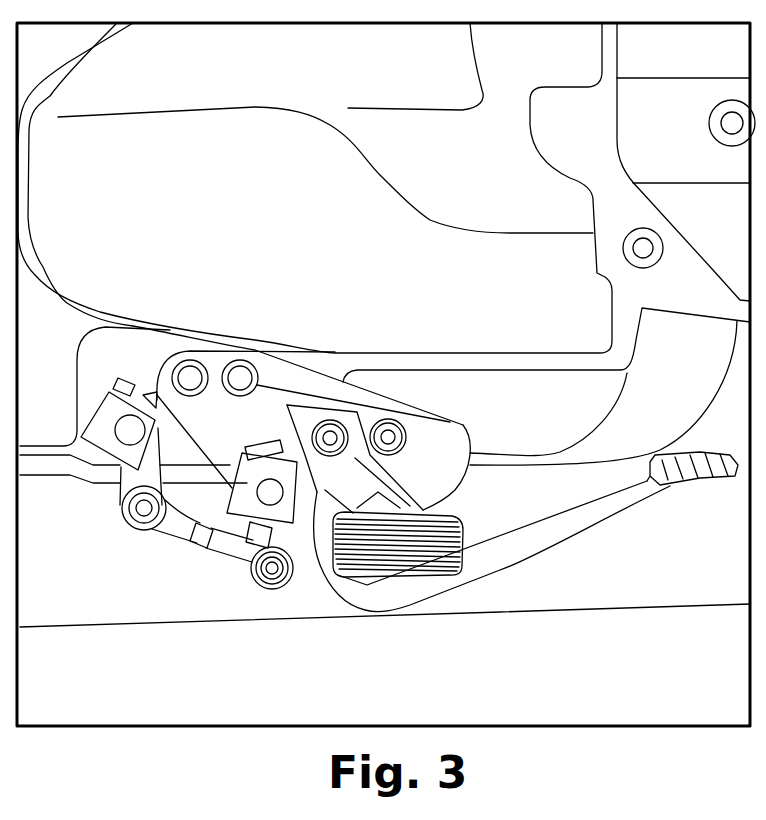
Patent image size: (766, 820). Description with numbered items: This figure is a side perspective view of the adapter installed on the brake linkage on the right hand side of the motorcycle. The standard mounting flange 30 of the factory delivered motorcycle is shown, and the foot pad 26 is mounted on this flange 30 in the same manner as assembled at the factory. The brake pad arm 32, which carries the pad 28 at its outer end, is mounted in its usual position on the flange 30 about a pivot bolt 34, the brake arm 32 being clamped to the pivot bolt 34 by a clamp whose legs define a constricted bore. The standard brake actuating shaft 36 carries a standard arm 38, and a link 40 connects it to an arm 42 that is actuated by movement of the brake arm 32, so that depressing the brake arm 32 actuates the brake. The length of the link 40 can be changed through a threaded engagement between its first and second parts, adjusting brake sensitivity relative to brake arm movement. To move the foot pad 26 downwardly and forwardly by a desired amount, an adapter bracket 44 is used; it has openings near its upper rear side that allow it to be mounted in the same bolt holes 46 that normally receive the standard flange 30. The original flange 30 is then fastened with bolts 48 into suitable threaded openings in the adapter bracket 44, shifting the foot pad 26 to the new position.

The foot pad 26 is at (445, 530).
The pad 28 is at (697, 476).
The standard mounting flange 30 is at (425, 455).
The brake pad arm 32 is at (560, 532).
The pivot bolt 34 is at (275, 490).
The brake actuating shaft 36 is at (125, 428).
The standard arm 38 is at (121, 482).
The link 40 is at (220, 546).
The arm 42 is at (247, 570).
The adapter bracket 44 is at (219, 365).
The bolt holes 46 is at (188, 372).
The bolts 48 is at (390, 436).